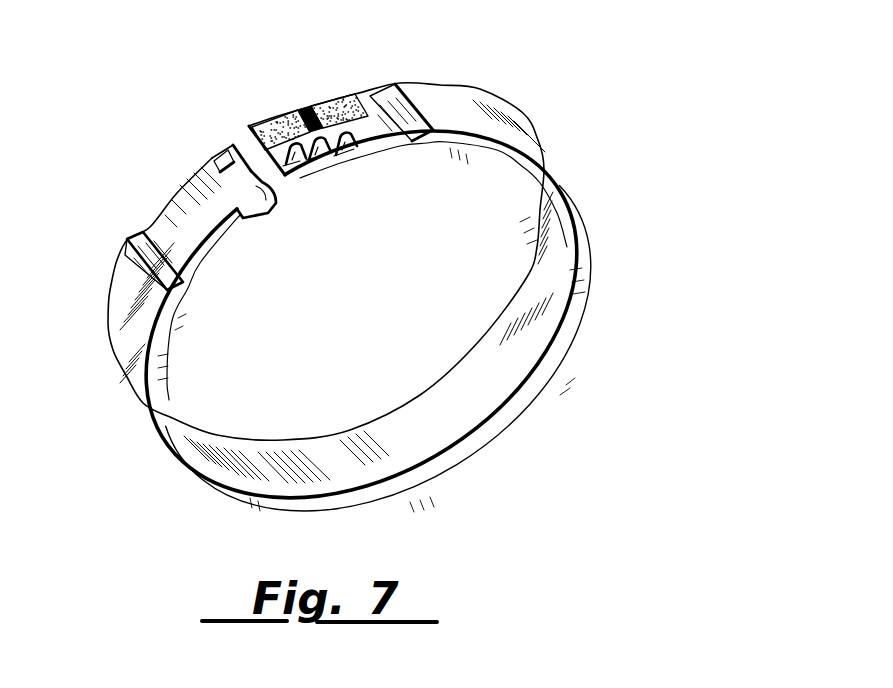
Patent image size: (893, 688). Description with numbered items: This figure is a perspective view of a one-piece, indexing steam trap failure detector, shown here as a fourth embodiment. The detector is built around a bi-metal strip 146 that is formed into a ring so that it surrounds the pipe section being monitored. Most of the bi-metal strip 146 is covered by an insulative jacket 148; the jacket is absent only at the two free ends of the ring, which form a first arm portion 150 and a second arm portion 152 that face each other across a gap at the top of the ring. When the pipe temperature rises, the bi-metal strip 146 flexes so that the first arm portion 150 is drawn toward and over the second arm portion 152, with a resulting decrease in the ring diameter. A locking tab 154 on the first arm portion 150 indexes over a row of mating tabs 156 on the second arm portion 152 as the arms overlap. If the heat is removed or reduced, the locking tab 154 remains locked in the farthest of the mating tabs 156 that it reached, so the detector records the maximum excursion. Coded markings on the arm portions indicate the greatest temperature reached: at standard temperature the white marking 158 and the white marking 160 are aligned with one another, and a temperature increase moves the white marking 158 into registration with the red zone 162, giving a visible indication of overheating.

The bi-metal strip 146 is at (445, 418).
The insulative jacket 148 is at (130, 243).
The first arm portion 150 is at (193, 226).
The second arm portion 152 is at (368, 105).
The locking tab 154 is at (258, 208).
The mating tabs 156 is at (330, 167).
The white marking 158 is at (212, 158).
The white marking 160 is at (303, 112).
The red zone 162 is at (334, 97).